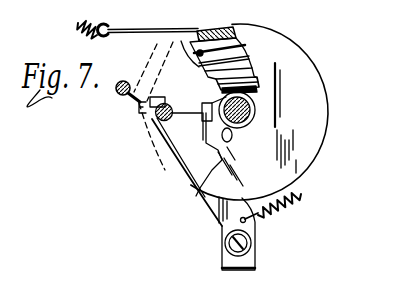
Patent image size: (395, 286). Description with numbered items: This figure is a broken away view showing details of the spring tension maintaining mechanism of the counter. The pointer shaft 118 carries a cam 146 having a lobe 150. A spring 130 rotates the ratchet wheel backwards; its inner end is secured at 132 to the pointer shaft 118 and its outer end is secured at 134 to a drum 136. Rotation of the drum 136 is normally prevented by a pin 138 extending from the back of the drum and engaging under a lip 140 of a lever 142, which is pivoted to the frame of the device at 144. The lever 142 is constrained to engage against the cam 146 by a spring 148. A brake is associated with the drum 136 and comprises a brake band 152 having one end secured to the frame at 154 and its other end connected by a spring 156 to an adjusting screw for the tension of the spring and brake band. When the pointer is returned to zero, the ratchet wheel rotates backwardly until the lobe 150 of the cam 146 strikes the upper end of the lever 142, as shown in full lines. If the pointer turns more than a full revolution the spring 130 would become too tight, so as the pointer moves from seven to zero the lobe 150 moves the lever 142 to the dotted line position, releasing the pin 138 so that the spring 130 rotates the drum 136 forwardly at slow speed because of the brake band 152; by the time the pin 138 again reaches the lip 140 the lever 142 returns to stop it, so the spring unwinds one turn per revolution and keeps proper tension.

The pointer shaft 118 is at (257, 117).
The spring 130 is at (236, 41).
The inner end securing point 132 is at (258, 100).
The outer end securing point 134 is at (198, 31).
The drum 136 is at (292, 50).
The pin 138 is at (171, 120).
The lip 140 is at (158, 99).
The lever 142 is at (212, 212).
The pivot 144 is at (230, 245).
The cam 146 is at (224, 140).
The spring 148 is at (302, 196).
The lobe 150 is at (210, 103).
The brake band 152 is at (160, 33).
The frame securing point 154 is at (138, 108).
The spring 156 is at (103, 25).